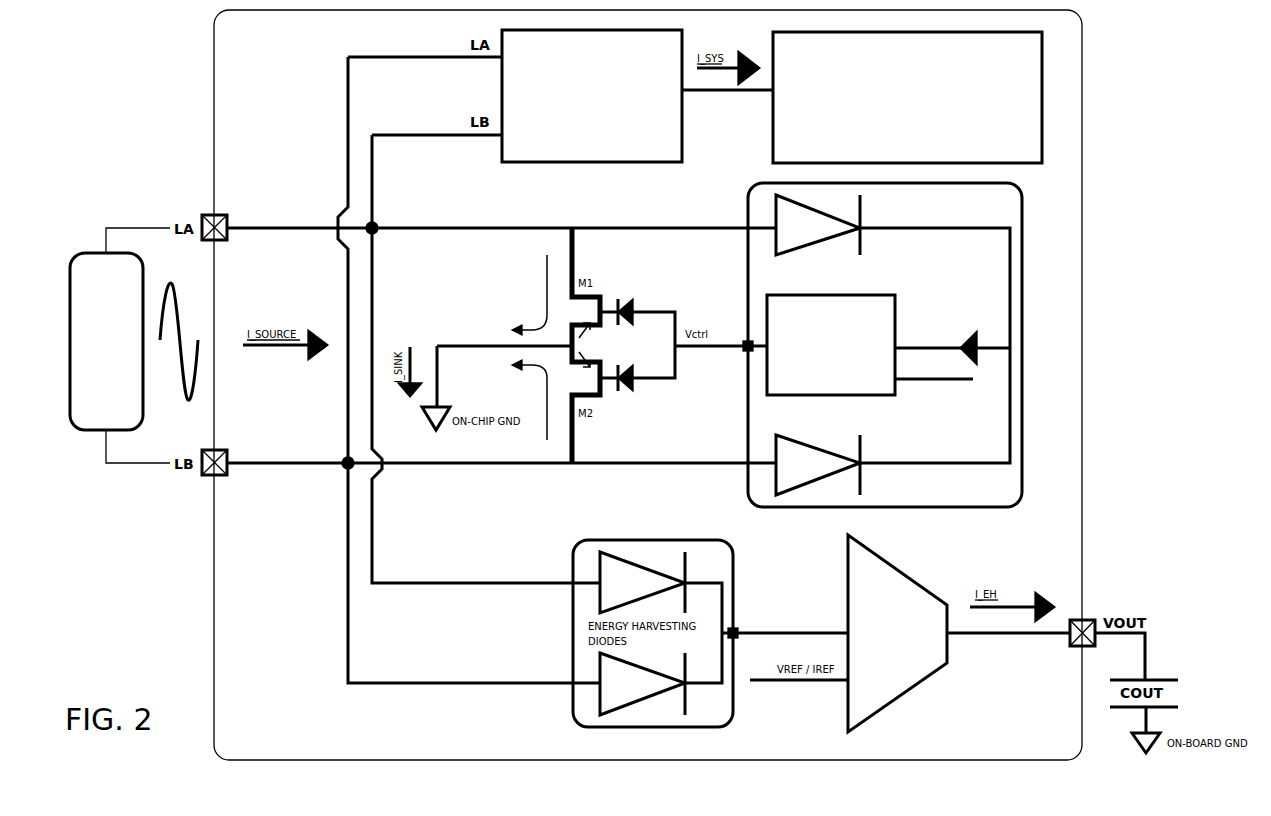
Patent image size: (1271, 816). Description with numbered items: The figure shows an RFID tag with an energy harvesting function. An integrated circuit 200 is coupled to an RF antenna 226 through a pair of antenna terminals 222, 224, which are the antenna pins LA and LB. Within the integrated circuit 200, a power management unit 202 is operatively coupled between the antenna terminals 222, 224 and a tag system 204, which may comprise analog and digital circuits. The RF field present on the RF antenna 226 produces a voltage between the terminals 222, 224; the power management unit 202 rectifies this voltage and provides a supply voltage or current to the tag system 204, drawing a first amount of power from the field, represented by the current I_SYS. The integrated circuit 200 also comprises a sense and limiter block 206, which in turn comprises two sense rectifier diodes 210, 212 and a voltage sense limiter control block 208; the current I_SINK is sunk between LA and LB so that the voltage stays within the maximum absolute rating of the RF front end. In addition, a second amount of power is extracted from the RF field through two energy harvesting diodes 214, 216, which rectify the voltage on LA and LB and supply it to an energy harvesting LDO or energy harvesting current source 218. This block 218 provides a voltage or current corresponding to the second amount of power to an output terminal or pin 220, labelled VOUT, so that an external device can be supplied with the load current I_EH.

The integrated circuit 200 is at (272, 51).
The power management unit 202 is at (662, 68).
The tag system 204 is at (1003, 68).
The sense and limiter block 206 is at (885, 345).
The voltage sense limiter control block 208 is at (869, 323).
The sense rectifier diode 210 is at (817, 233).
The sense rectifier diode 212 is at (817, 471).
The energy harvesting diode 214 is at (640, 595).
The energy harvesting diode 216 is at (640, 693).
The energy harvesting LDO or energy harvesting current source 218 is at (929, 631).
The output terminal 220 is at (1087, 620).
The antenna terminal 222 is at (202, 213).
The antenna terminal 224 is at (202, 477).
The RF antenna 226 is at (117, 293).